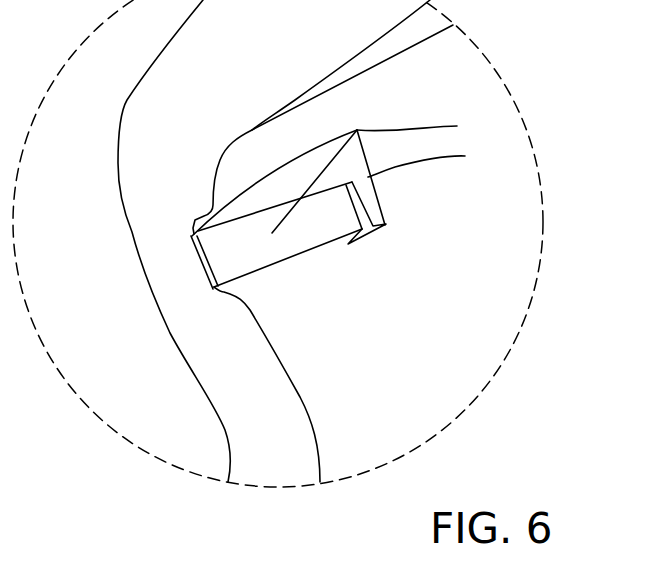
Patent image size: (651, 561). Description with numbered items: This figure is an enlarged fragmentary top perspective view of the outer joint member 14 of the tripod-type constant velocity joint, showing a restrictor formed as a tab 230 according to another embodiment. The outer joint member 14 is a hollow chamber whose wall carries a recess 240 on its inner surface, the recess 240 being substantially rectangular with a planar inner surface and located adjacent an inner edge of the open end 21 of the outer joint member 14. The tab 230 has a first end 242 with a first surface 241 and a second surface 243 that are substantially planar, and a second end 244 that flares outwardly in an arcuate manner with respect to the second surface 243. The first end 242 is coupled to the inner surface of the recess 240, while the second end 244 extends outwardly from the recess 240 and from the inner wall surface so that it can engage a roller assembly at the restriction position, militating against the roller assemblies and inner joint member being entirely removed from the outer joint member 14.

The outer joint member 14 is at (443, 380).
The open end 21 is at (132, 228).
The tab 230 is at (220, 250).
The recess 240 is at (362, 228).
The first surface 241 is at (218, 275).
The first end 242 is at (200, 238).
The second surface 243 is at (465, 156).
The second end 244 is at (457, 126).